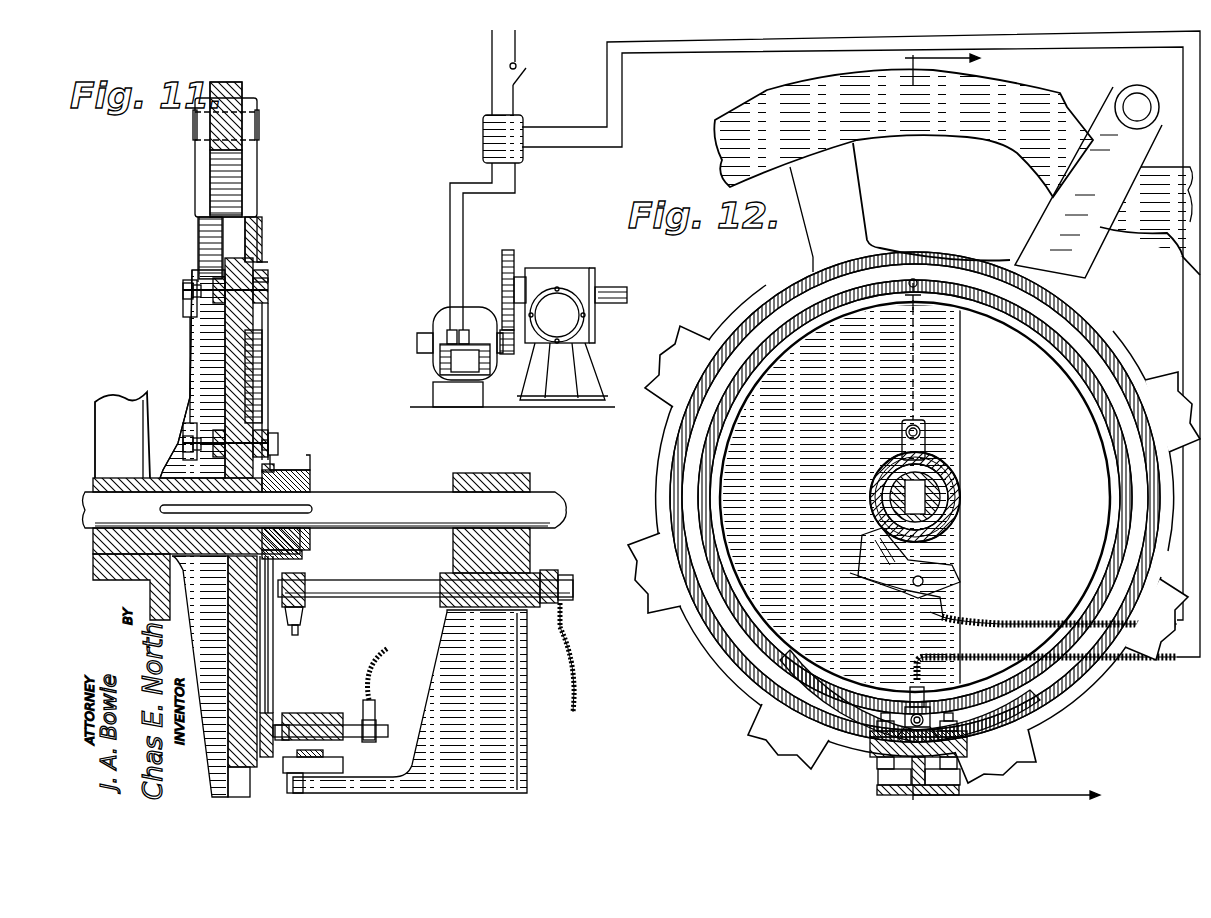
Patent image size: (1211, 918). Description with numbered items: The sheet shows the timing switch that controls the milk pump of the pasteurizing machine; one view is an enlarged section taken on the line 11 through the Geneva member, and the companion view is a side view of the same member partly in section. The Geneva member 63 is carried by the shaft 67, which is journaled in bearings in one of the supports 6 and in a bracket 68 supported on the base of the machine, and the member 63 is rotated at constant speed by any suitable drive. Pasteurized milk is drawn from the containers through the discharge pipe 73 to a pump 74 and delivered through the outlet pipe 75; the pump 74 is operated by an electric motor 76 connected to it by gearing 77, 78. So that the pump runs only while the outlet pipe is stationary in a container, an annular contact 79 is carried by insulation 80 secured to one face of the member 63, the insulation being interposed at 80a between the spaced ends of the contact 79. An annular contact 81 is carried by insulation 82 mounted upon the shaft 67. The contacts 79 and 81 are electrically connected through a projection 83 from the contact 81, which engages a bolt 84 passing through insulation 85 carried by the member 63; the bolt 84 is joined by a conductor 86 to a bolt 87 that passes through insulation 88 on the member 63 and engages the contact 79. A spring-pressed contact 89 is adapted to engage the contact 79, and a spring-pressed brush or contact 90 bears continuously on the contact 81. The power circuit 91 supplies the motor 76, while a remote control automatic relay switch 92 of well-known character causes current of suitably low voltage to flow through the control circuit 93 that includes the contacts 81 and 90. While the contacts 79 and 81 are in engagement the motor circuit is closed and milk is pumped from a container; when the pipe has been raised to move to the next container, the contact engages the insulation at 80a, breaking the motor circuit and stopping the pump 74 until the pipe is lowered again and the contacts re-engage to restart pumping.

In FIG. 11, the supports 6 is at (196, 506).
In FIG. 12, the section line 11- 11 is at (1018, 426).
In FIG. 11, the Geneva member 63 is at (200, 240).
In FIG. 12, the Geneva member 63 is at (778, 288).
In FIG. 11, the shaft 67 is at (370, 492).
In FIG. 12, the shaft 67 is at (958, 484).
In FIG. 11, the bracket 68 is at (530, 473).
In FIG. 12, the discharge pipe 73 is at (625, 304).
In FIG. 12, the pump 74 is at (575, 268).
In FIG. 12, the outlet pipe 75 is at (521, 277).
In FIG. 12, the electric motor 76 is at (436, 322).
In FIG. 12, the gearing 77 is at (507, 354).
In FIG. 12, the gearing 78 is at (506, 250).
In FIG. 11, the annular contact 79 is at (268, 299).
In FIG. 12, the annular contact 79 is at (690, 462).
In FIG. 11, the insulation 80 is at (268, 312).
In FIG. 12, the insulation 80 is at (680, 493).
In FIG. 12, the insulation portion 80a is at (790, 665).
In FIG. 11, the annular contact 81 is at (272, 468).
In FIG. 12, the annular contact 81 is at (945, 470).
In FIG. 11, the insulation 82 is at (305, 478).
In FIG. 12, the insulation 82 is at (960, 512).
In FIG. 11, the projection 83 is at (272, 440).
In FIG. 12, the projection 83 is at (925, 445).
In FIG. 11, the bolt 84 is at (240, 437).
In FIG. 12, the bolt 84 is at (905, 428).
In FIG. 11, the insulation 85 is at (252, 440).
In FIG. 11, the conductor 86 is at (188, 340).
In FIG. 11, the bolt 87 is at (205, 284).
In FIG. 11, the insulation 88 is at (268, 278).
In FIG. 11, the spring-pressed contact 89 is at (288, 715).
In FIG. 11, the spring-pressed brush 90 is at (305, 580).
In FIG. 12, the spring-pressed brush 90 is at (922, 552).
In FIG. 12, the power circuit 91 is at (492, 100).
In FIG. 12, the remote control automatic relay switch 92 is at (478, 134).
In FIG. 11, the control circuit 93 is at (386, 650).
In FIG. 12, the control circuit 93 is at (556, 127).